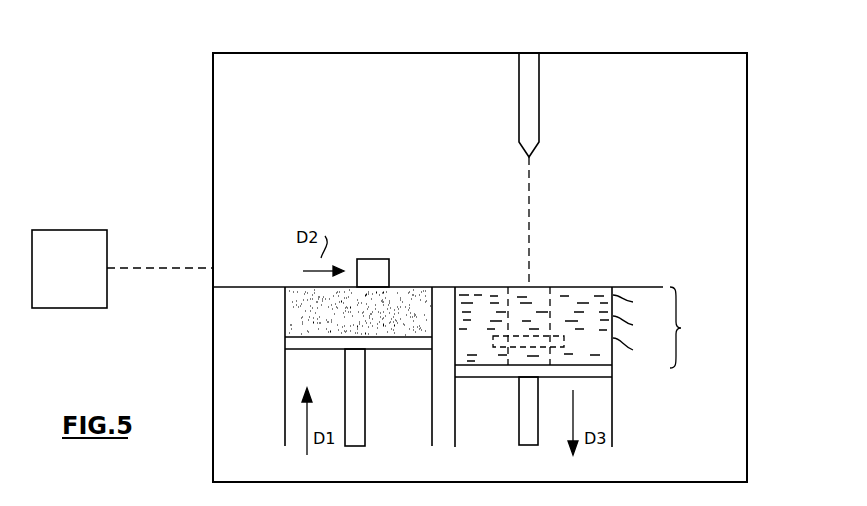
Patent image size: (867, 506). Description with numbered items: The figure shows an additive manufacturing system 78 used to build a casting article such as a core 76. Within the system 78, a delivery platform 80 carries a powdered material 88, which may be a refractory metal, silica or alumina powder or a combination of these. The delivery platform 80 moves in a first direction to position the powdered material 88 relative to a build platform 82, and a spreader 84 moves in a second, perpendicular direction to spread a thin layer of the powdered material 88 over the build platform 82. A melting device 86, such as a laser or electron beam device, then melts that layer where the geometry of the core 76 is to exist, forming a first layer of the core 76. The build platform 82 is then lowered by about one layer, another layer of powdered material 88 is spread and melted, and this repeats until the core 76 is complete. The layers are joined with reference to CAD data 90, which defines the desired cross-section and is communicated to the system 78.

The additive manufacturing system 78 is at (353, 53).
The CAD data 90 is at (55, 230).
The melting device 86 is at (532, 99).
The spreader 84 is at (370, 266).
The powdered material 88 is at (369, 323).
The core 76 is at (552, 246).
The delivery platform 80 is at (385, 343).
The build platform 82 is at (507, 370).